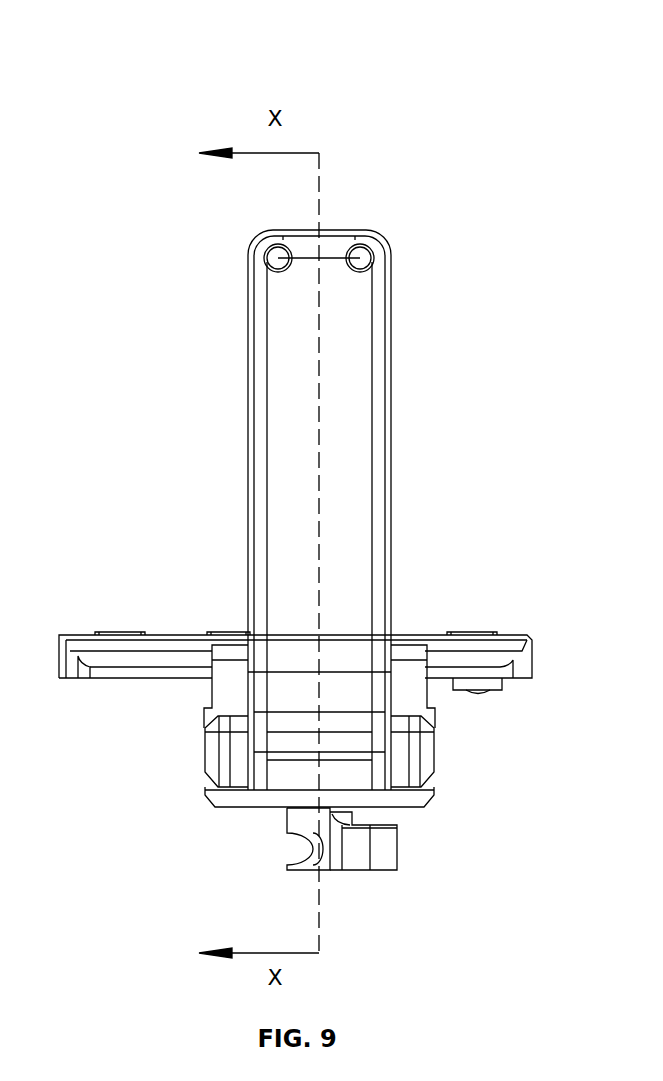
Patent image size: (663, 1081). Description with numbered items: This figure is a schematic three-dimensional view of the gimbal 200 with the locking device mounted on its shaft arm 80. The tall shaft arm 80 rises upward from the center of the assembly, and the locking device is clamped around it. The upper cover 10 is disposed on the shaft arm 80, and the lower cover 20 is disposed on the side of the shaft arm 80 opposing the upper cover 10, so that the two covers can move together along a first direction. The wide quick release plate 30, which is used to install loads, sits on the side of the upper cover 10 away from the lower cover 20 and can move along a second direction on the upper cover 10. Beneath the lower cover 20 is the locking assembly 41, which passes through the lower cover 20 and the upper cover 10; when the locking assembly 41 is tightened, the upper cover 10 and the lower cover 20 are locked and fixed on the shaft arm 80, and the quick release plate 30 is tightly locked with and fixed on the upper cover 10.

The gimbal 200 is at (236, 38).
The quick release plate 30 is at (163, 644).
The upper cover 10 is at (212, 707).
The shaft arm 80 is at (214, 748).
The lower cover 20 is at (205, 790).
The locking assembly 41 is at (295, 825).